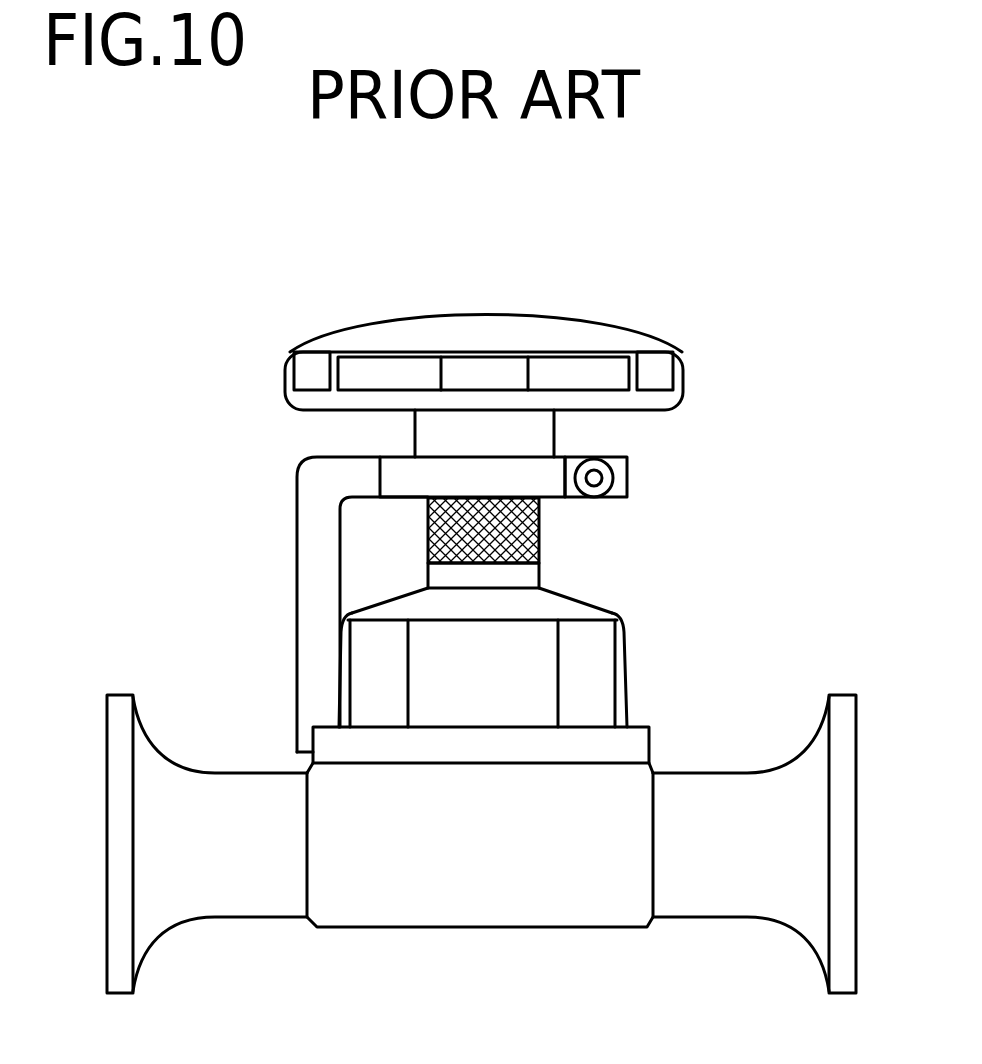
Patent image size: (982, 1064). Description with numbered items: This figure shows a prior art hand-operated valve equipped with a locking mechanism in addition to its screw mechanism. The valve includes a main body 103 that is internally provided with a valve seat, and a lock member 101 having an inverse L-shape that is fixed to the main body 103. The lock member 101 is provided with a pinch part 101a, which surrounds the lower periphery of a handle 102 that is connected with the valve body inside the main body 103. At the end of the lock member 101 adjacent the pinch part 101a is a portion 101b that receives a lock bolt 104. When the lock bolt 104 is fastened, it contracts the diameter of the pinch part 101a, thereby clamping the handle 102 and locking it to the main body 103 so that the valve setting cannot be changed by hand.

The lock member 101 is at (322, 547).
The pinch part 101a is at (405, 468).
The bracket end portion 101b is at (619, 464).
The handle 102 is at (494, 330).
The main body 103 is at (615, 650).
The lock bolt 104 is at (594, 486).